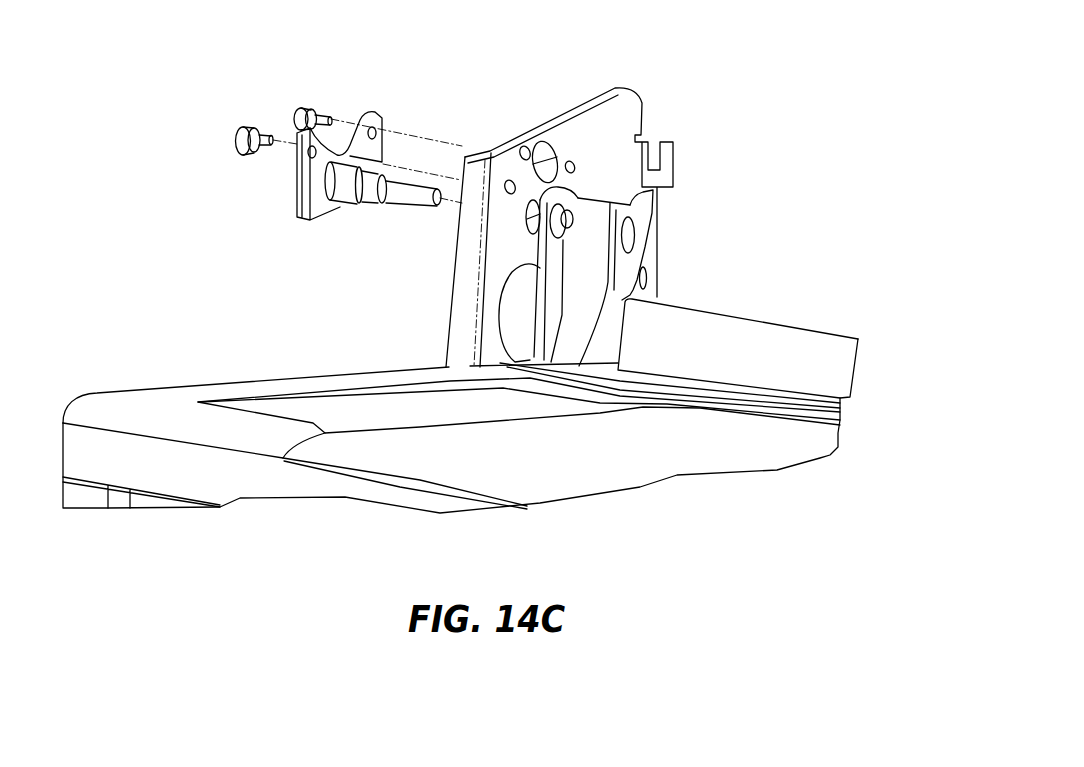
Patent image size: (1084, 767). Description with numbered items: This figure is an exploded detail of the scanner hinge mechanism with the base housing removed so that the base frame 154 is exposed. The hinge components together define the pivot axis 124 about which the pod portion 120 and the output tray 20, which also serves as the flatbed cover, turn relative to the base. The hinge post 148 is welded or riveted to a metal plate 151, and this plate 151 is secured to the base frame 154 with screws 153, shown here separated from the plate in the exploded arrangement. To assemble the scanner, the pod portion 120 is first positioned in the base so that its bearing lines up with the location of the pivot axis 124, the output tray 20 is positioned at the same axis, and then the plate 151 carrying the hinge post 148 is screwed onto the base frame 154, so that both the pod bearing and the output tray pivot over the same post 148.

The output tray 20 is at (580, 282).
The pod portion 120 is at (538, 236).
The axis 124 is at (628, 234).
The hinge post 148 is at (416, 204).
The metal plate 151 is at (297, 195).
The screws 153 is at (300, 112).
The base frame 154 is at (578, 113).